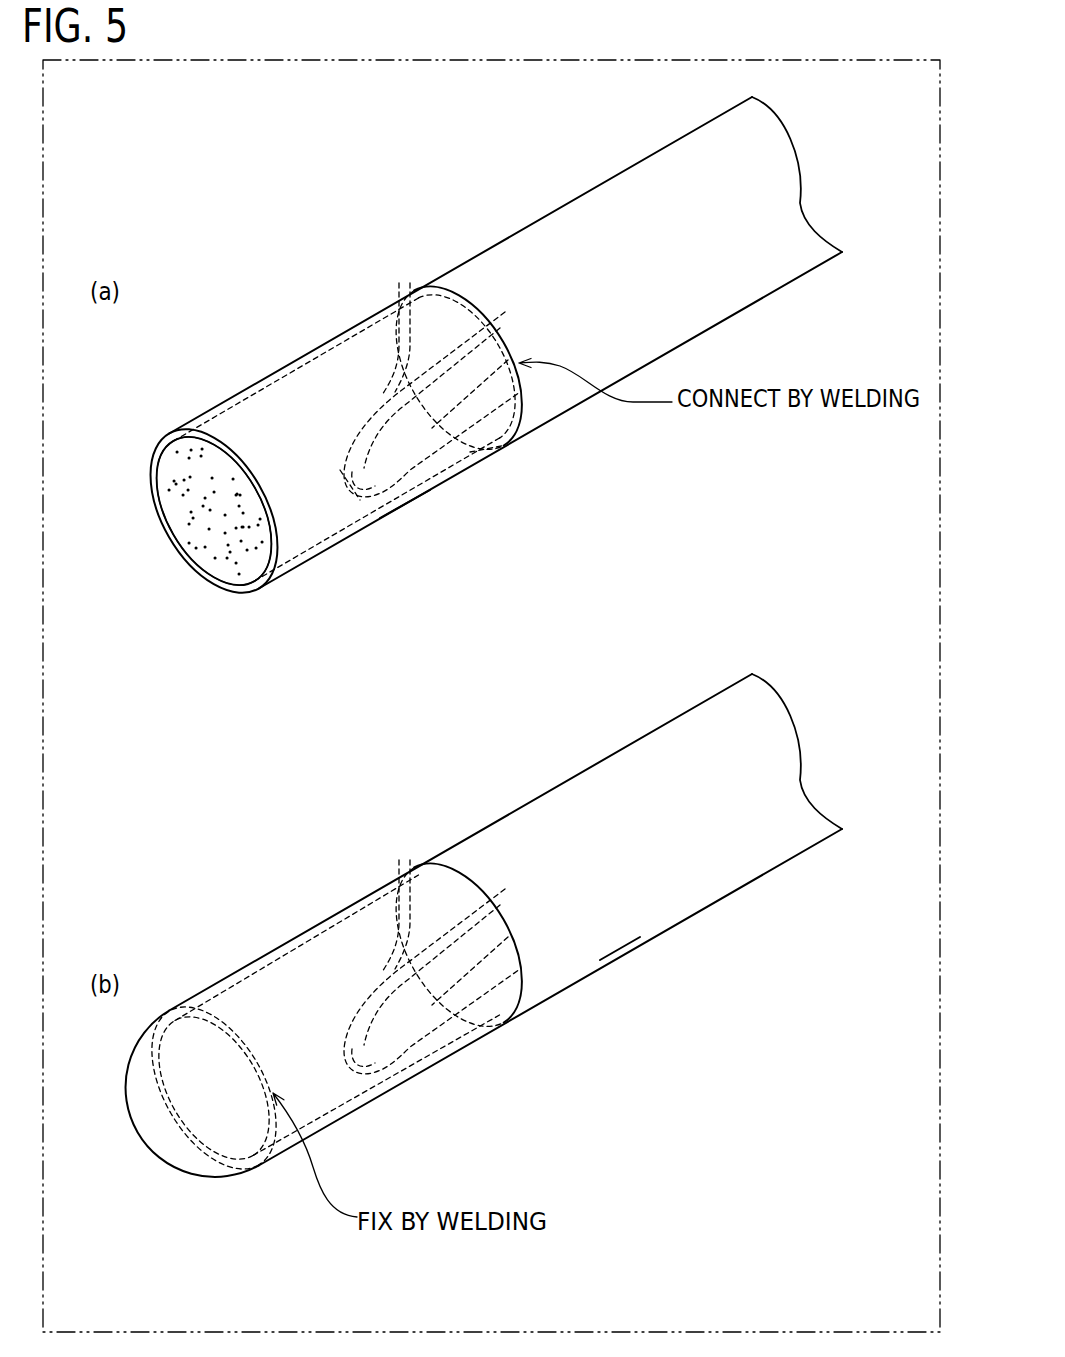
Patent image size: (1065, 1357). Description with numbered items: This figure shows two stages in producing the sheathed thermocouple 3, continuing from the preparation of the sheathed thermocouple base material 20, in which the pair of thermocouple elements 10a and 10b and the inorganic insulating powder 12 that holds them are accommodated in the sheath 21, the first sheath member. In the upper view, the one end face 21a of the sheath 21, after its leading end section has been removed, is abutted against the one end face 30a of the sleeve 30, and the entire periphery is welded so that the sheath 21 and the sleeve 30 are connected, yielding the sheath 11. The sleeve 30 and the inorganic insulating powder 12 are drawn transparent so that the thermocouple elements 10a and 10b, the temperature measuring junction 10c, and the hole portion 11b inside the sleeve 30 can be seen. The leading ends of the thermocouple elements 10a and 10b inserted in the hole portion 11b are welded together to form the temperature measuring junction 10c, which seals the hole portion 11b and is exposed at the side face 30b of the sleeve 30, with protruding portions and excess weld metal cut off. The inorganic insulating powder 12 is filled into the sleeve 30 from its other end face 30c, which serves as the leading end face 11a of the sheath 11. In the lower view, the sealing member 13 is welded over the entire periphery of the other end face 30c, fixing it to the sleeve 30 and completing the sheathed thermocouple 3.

The sheathed thermocouple 3 is at (618, 1036).
The thermocouple element 10a is at (378, 388).
The thermocouple element 10b is at (418, 462).
The temperature measuring junction 10c is at (345, 525).
The sheath 11 is at (640, 144).
The leading end face of the sheath 11a is at (214, 510).
The hole portion 11b is at (333, 470).
The inorganic insulating powder 12 is at (195, 518).
The sealing member 13 is at (158, 1132).
The sheathed thermocouple base material 20 is at (585, 158).
The sheath 21 is at (563, 242).
The one end face of the sheath 21a is at (407, 287).
The sleeve 30 is at (240, 354).
The one end face of the sleeve 30a is at (518, 446).
The side face of the sleeve 30b is at (403, 505).
The other end face of the sleeve 30c is at (157, 455).